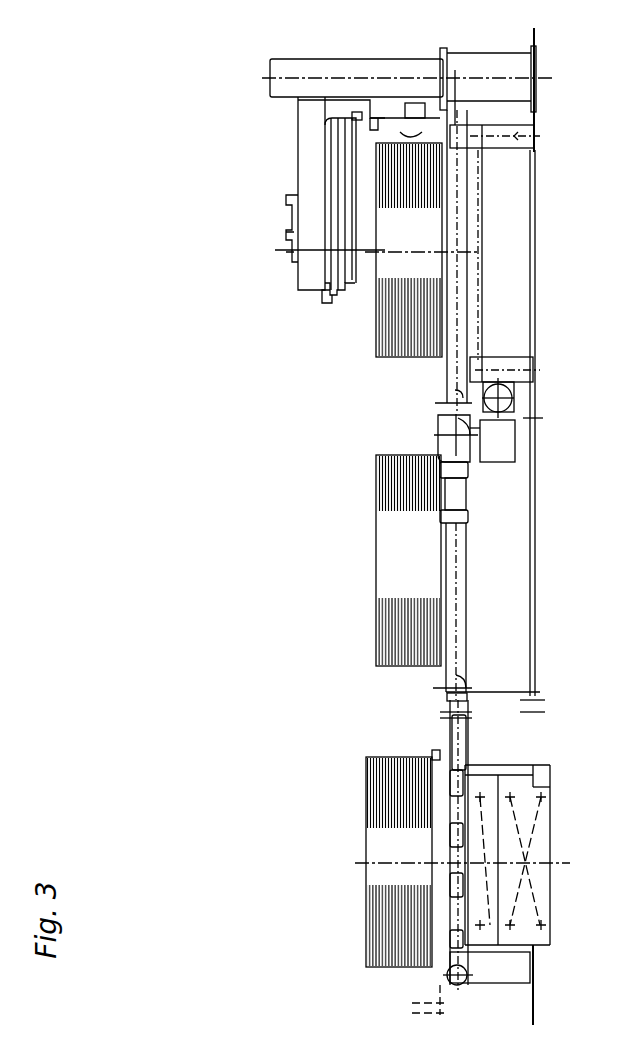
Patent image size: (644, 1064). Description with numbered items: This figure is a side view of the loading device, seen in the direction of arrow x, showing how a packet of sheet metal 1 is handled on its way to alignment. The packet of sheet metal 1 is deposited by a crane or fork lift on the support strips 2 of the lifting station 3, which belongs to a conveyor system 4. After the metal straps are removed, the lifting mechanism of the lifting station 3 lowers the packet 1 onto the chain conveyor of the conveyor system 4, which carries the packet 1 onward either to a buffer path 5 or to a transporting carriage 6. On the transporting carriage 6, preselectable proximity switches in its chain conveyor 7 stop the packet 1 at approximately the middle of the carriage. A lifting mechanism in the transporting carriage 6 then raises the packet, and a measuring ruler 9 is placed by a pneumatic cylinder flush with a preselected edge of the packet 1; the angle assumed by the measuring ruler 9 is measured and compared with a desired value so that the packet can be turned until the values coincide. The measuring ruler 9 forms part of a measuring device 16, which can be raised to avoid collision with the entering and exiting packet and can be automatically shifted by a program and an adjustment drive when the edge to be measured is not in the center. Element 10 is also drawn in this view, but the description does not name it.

The packet of sheet metal 1 is at (398, 828).
The support strips 2 is at (450, 780).
The lifting station 3 is at (545, 826).
The conveyor system 4 is at (445, 742).
The buffer path 5 is at (467, 547).
The transporting carriage 6 is at (512, 302).
The chain conveyor 7 is at (447, 377).
The measuring ruler 9 is at (432, 140).
The head assembly 10 is at (350, 180).
The measuring device 16 is at (319, 70).